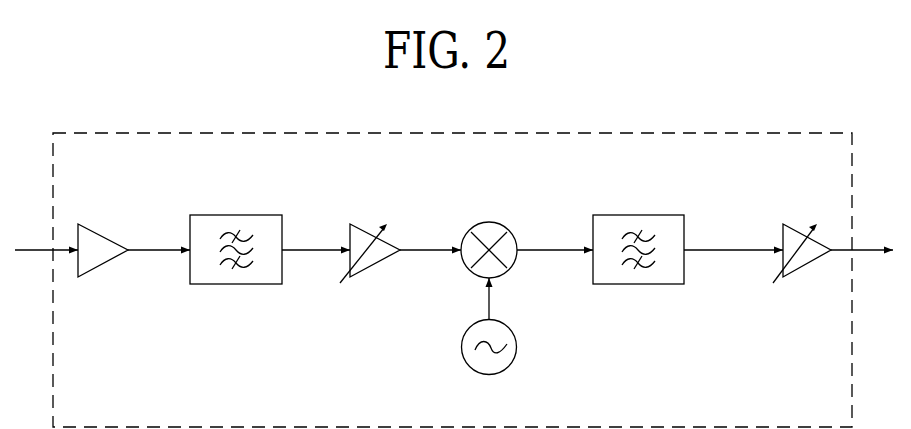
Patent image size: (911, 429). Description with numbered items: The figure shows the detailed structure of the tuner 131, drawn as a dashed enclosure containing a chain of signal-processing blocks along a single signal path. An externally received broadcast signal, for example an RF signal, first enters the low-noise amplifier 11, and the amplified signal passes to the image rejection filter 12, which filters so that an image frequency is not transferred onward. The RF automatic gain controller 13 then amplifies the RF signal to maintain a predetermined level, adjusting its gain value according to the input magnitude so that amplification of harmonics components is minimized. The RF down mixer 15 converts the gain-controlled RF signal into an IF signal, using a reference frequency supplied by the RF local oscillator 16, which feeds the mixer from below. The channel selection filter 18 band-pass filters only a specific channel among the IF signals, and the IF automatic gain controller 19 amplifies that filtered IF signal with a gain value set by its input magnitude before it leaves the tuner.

The tuner 131 is at (168, 133).
The low-noise amplifier 11 is at (90, 225).
The image rejection filter 12 is at (235, 215).
The RF automatic gain controller 13 is at (366, 225).
The RF down mixer 15 is at (517, 263).
The RF local oscillator 16 is at (515, 358).
The channel selection filter 18 is at (637, 215).
The IF automatic gain controller 19 is at (797, 225).